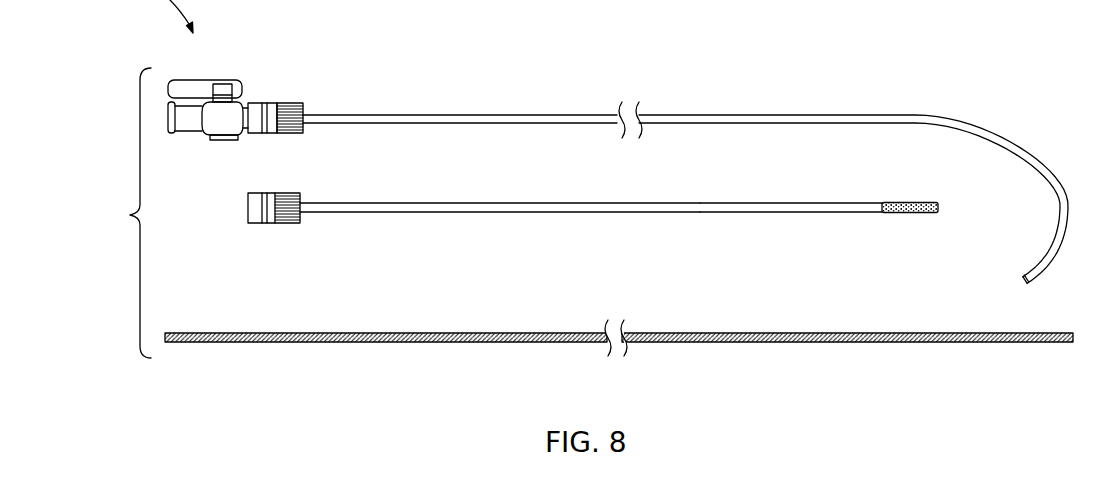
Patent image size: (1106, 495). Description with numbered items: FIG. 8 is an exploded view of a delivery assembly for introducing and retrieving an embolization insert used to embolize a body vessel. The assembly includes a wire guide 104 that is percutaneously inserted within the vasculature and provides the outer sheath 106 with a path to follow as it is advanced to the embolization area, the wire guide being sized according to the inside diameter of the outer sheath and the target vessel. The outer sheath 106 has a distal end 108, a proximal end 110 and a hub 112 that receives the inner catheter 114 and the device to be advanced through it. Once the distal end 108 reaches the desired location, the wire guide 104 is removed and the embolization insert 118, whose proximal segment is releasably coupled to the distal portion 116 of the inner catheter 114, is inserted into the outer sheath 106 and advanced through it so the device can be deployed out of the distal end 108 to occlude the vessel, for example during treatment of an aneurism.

The wire guide 104 is at (255, 332).
The outer sheath 106 is at (412, 113).
The distal end 108 is at (1023, 283).
The proximal end 110 is at (302, 110).
The hub 112 is at (223, 123).
The inner catheter 114 is at (435, 202).
The distal portion 116 is at (762, 202).
The embolization insert 118 is at (897, 213).